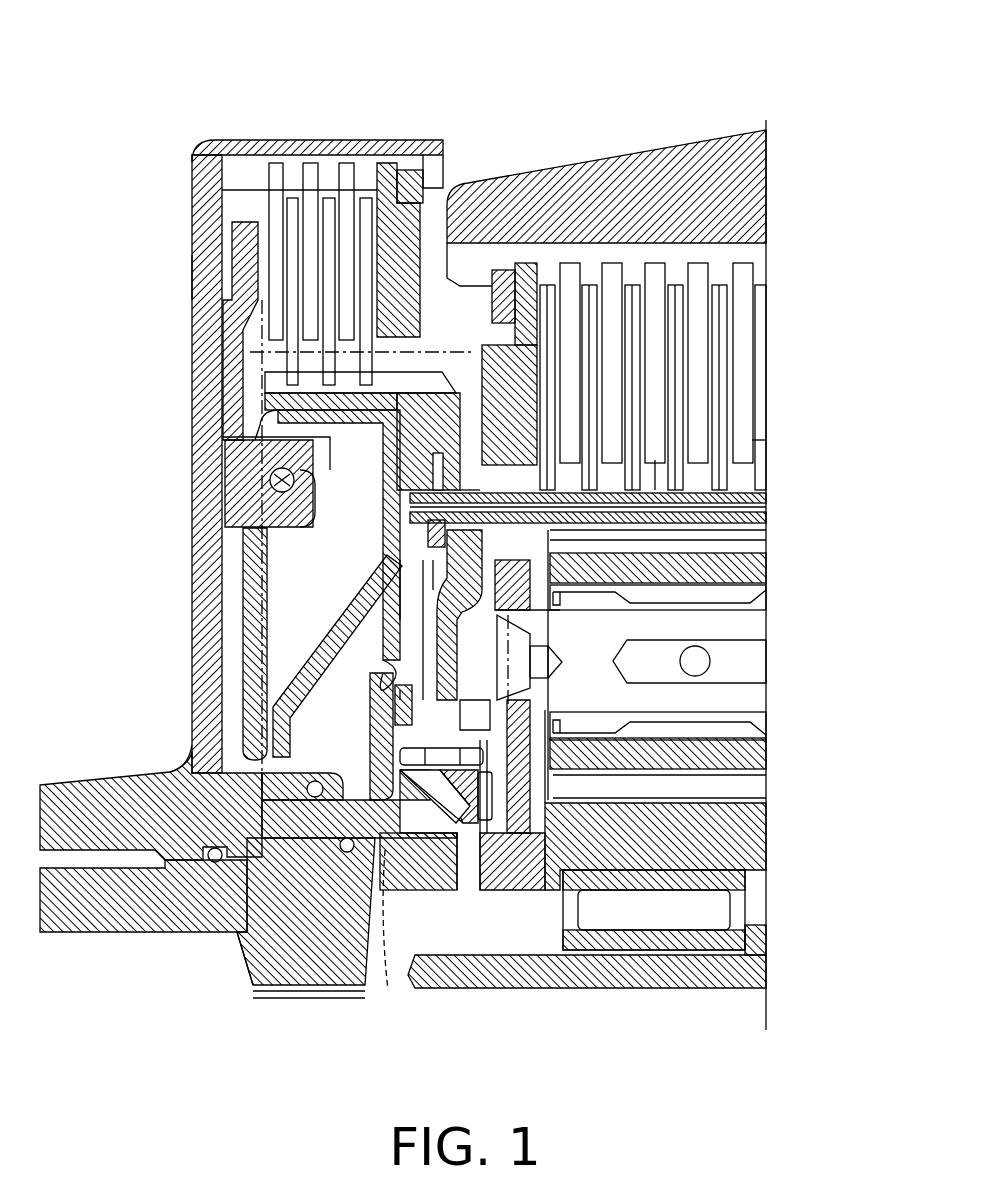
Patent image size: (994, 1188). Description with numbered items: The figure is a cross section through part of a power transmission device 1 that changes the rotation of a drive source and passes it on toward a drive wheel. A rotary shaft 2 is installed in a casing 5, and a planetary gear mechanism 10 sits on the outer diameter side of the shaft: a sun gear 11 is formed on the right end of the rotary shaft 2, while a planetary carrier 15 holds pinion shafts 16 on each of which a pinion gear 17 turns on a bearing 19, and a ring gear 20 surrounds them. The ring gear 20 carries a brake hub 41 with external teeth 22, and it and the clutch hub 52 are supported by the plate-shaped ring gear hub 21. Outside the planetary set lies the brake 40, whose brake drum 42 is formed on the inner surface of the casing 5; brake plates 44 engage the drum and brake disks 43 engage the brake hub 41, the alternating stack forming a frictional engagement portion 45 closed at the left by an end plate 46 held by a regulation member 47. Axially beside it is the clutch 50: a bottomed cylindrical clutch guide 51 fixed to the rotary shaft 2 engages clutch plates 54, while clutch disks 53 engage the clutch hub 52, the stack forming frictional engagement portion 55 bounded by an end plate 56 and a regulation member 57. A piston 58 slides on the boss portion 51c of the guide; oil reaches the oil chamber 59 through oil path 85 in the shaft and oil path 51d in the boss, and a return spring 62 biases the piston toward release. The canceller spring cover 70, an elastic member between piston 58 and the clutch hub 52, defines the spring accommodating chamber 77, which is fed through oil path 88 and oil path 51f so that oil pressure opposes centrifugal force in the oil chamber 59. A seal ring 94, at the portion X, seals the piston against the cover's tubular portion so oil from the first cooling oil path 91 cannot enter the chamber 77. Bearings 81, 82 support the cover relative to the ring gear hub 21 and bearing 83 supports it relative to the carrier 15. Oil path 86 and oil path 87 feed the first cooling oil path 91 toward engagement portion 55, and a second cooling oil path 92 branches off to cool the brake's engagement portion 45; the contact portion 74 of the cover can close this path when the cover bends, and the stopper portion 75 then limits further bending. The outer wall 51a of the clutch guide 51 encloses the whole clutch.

The power transmission device 1 is at (798, 84).
The rotary shaft 2 is at (100, 920).
The casing 5 is at (605, 185).
The planetary gear mechanism 10 is at (858, 420).
The sun gear 11 is at (752, 800).
The planetary carrier 15 is at (500, 616).
The pinion shaft 16 is at (750, 695).
The pinion gear 17 is at (766, 565).
The bearing 19 is at (766, 595).
The ring gear 20 is at (752, 517).
The ring gear hub 21 is at (484, 555).
The external teeth 22 is at (752, 445).
The brake 40 is at (568, 130).
The brake hub 41 is at (750, 497).
The brake drum 42 is at (755, 265).
The brake disk 43 is at (742, 290).
The brake plate 44 is at (676, 287).
The frictional engagement portion 45 is at (668, 90).
The end plate 46 is at (493, 348).
The regulation member 47 is at (500, 280).
The clutch 50 is at (286, 116).
The clutch guide 51 is at (252, 140).
The outer wall 51a is at (198, 282).
The boss portion 51c is at (300, 985).
The oil path 51d is at (195, 770).
The oil path 51f is at (356, 985).
The clutch hub 52 is at (265, 405).
The clutch disk 53 is at (347, 165).
The clutch plate 54 is at (330, 195).
The frictional engagement portion 55 is at (365, 46).
The end plate 56 is at (395, 200).
The regulation member 57 is at (412, 165).
The piston 58 is at (262, 365).
The oil chamber 59 is at (240, 600).
The return spring 62 is at (310, 653).
The canceller spring cover 70 is at (386, 468).
The contact portion 74 is at (410, 393).
The stopper portion 75 is at (384, 620).
The spring accommodating chamber 77 is at (361, 682).
The bearing 81 is at (400, 720).
The bearing 82 is at (398, 757).
The bearing 83 is at (562, 860).
The oil path 85 is at (235, 936).
The oil path 86 is at (488, 848).
The oil path 87 is at (465, 880).
The oil path 88 is at (390, 960).
The first cooling oil path 91 is at (410, 572).
The second cooling oil path 92 is at (660, 470).
The seal ring 94 is at (268, 482).
The portion X is at (262, 352).